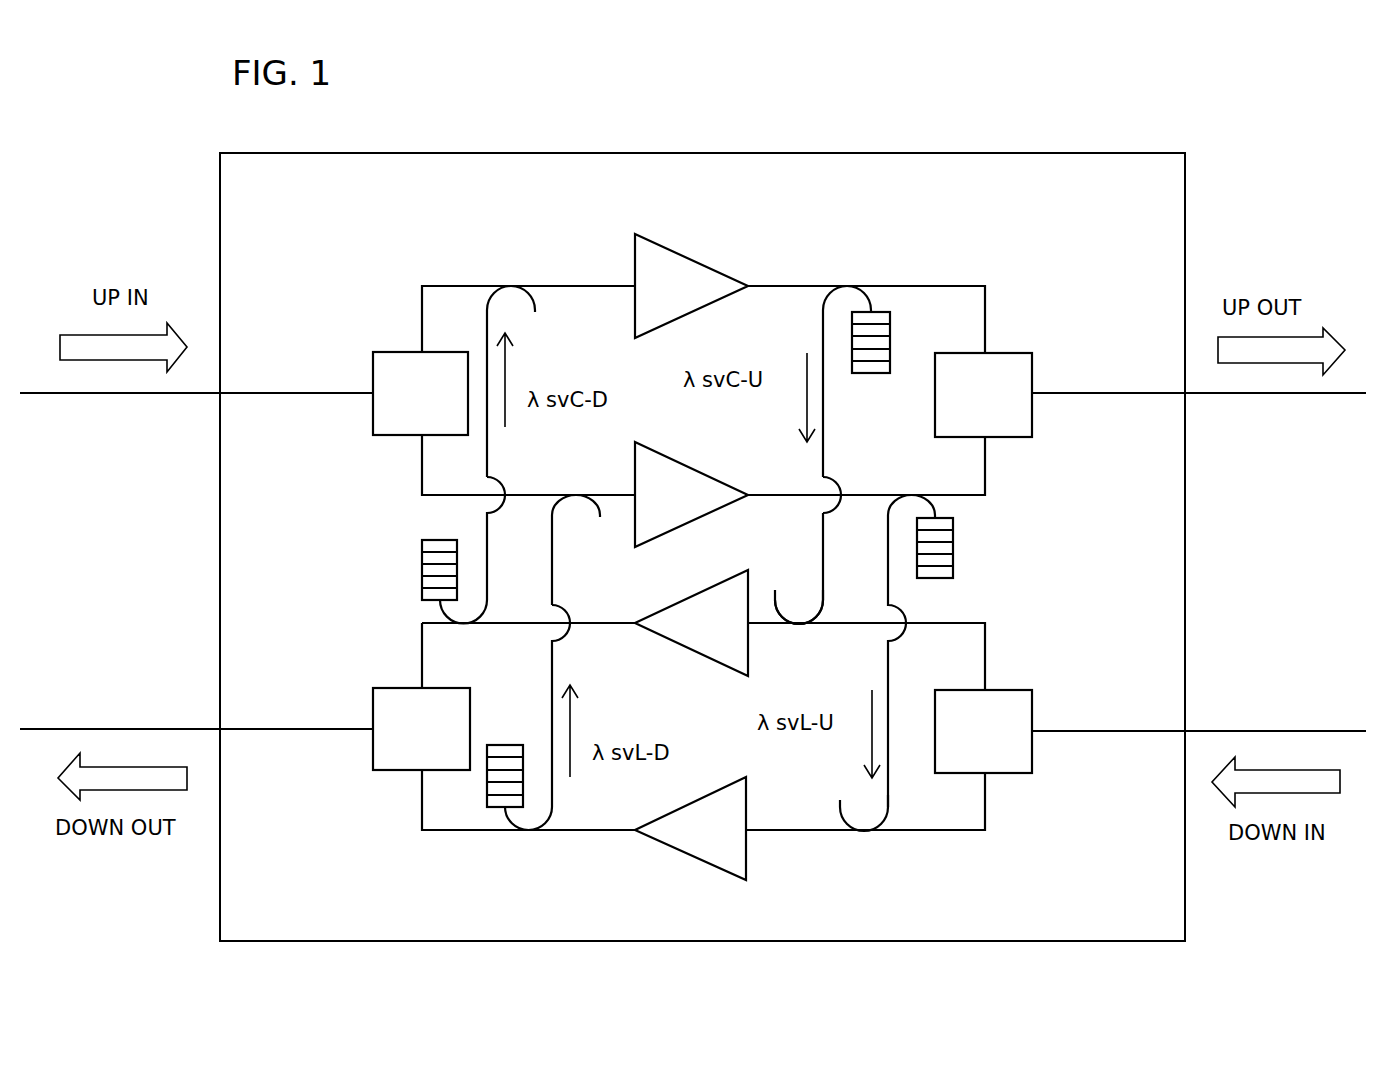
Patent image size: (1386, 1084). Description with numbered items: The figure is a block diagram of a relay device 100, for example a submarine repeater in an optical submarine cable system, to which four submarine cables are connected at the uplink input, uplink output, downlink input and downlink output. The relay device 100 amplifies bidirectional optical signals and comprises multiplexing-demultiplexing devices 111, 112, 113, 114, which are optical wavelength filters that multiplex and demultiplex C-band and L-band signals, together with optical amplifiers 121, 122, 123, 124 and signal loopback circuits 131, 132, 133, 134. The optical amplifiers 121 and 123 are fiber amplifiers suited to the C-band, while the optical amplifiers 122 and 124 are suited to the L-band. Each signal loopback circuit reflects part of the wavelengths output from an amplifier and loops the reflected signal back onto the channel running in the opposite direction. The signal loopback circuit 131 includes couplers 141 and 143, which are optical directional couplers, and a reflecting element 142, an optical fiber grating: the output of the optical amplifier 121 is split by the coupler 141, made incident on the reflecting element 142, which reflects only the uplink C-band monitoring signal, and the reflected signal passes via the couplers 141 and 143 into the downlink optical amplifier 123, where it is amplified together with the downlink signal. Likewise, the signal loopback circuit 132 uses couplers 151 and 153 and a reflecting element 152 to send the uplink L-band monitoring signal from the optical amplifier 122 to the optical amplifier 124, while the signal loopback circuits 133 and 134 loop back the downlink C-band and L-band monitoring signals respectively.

The relay device 100 is at (931, 152).
The multiplexing-demultiplexing device 111 is at (400, 352).
The multiplexing-demultiplexing device 112 is at (1005, 353).
The multiplexing-demultiplexing device 113 is at (1005, 690).
The multiplexing-demultiplexing device 114 is at (400, 688).
The optical amplifier 121 is at (682, 250).
The optical amplifier 122 is at (695, 463).
The optical amplifier 123 is at (700, 653).
The optical amplifier 124 is at (690, 855).
The signal loopback circuit 131 is at (820, 560).
The signal loopback circuit 132 is at (893, 570).
The signal loopback circuit 133 is at (483, 548).
The signal loopback circuit 134 is at (556, 598).
The coupler 141 is at (850, 285).
The reflecting element 142 is at (893, 356).
The coupler 143 is at (805, 623).
The coupler 151 is at (905, 495).
The reflecting element 152 is at (960, 555).
The coupler 153 is at (862, 833).